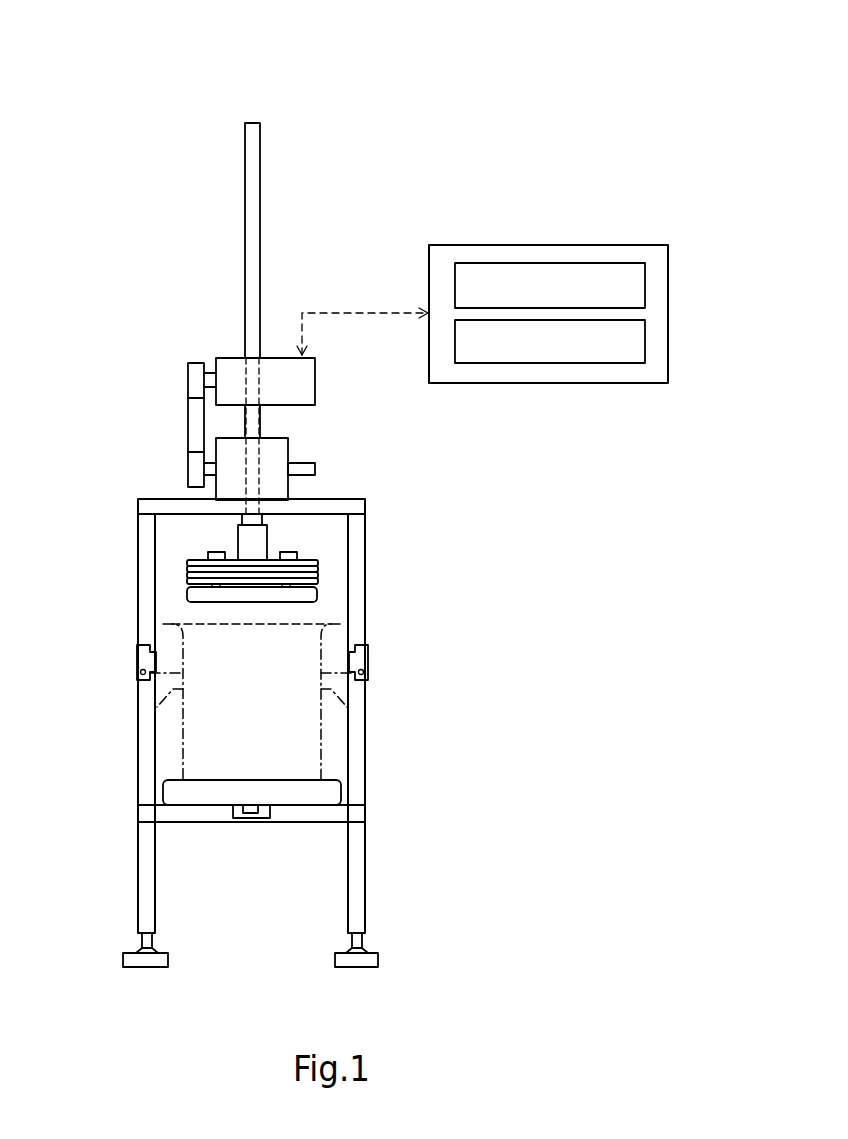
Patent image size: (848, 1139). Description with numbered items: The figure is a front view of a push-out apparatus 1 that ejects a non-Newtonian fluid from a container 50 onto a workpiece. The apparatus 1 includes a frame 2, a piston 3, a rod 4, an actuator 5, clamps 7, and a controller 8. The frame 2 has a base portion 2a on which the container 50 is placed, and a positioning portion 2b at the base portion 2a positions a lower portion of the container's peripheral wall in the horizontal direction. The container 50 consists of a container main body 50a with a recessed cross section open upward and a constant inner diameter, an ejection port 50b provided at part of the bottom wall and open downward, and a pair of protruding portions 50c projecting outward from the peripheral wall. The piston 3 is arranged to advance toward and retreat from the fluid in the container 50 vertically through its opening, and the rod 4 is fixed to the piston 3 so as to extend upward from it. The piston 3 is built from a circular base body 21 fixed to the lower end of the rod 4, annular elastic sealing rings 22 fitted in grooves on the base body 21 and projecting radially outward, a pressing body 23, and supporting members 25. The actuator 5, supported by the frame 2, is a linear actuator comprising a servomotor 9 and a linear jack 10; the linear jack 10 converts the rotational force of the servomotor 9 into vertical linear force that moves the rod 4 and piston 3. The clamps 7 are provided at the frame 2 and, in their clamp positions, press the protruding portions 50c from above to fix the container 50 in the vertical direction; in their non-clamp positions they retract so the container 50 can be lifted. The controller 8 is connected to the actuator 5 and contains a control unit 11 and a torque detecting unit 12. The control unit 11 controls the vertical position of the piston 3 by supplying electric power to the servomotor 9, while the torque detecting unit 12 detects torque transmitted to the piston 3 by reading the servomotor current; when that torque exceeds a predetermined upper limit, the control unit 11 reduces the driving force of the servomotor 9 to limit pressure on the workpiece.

The push-out apparatus 1 is at (83, 117).
The frame 2 is at (253, 715).
The base portion 2a is at (330, 803).
The positioning portion 2b is at (165, 782).
The piston 3 is at (253, 563).
The rod 4 is at (260, 208).
The actuator 5 is at (321, 429).
The clamps 7 is at (138, 652).
The controller 8 is at (596, 269).
The servomotor 9 is at (315, 385).
The linear jack 10 is at (288, 448).
The control unit 11 is at (645, 340).
The torque detecting unit 12 is at (645, 287).
The base body 21 is at (318, 563).
The sealing rings 22 is at (185, 575).
The pressing body 23 is at (317, 596).
The supporting members 25 is at (287, 552).
The container 50 is at (252, 770).
The container main body 50a is at (182, 718).
The ejection port 50b is at (255, 822).
The protruding portions 50c is at (138, 708).